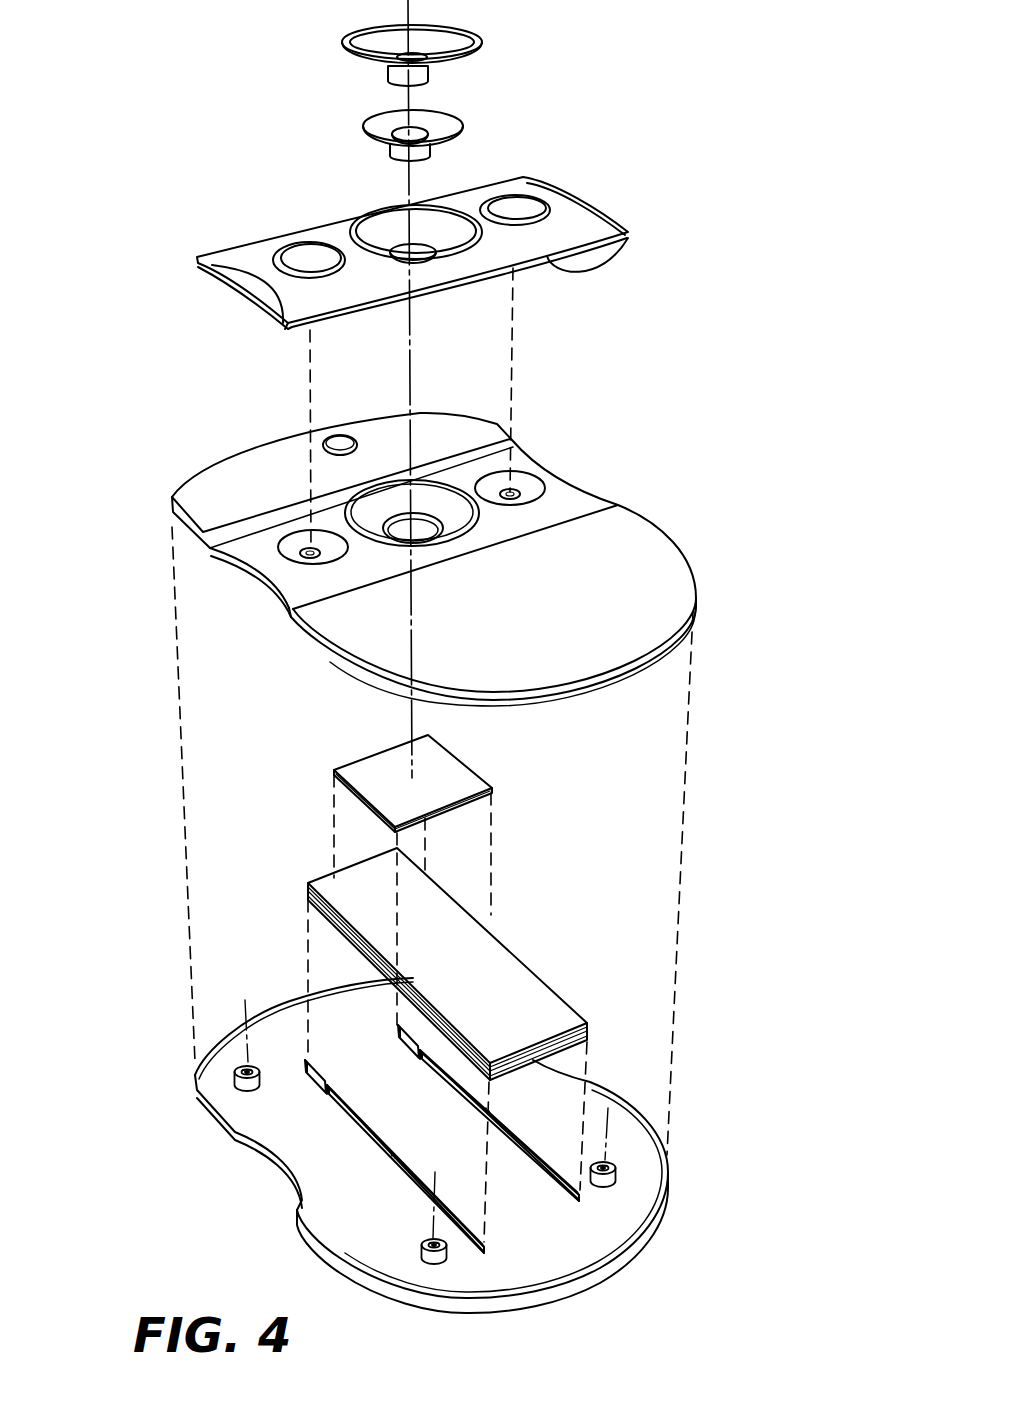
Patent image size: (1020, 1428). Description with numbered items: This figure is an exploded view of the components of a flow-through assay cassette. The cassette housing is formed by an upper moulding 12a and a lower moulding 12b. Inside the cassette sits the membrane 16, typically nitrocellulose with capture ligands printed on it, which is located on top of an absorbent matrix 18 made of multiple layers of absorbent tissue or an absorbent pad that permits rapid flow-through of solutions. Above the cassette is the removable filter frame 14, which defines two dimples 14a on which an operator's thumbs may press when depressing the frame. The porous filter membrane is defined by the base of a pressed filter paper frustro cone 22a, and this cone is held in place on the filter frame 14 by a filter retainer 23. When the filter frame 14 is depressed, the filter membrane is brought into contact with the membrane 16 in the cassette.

The filter retainer 23 is at (478, 58).
The pressed filter paper frustro cone 22a is at (453, 137).
The dimples 14a is at (520, 213).
The filter frame 14 is at (435, 230).
The upper moulding 12a is at (635, 545).
The membrane 16 is at (462, 783).
The absorbent matrix 18 is at (513, 983).
The lower moulding 12b is at (630, 1248).